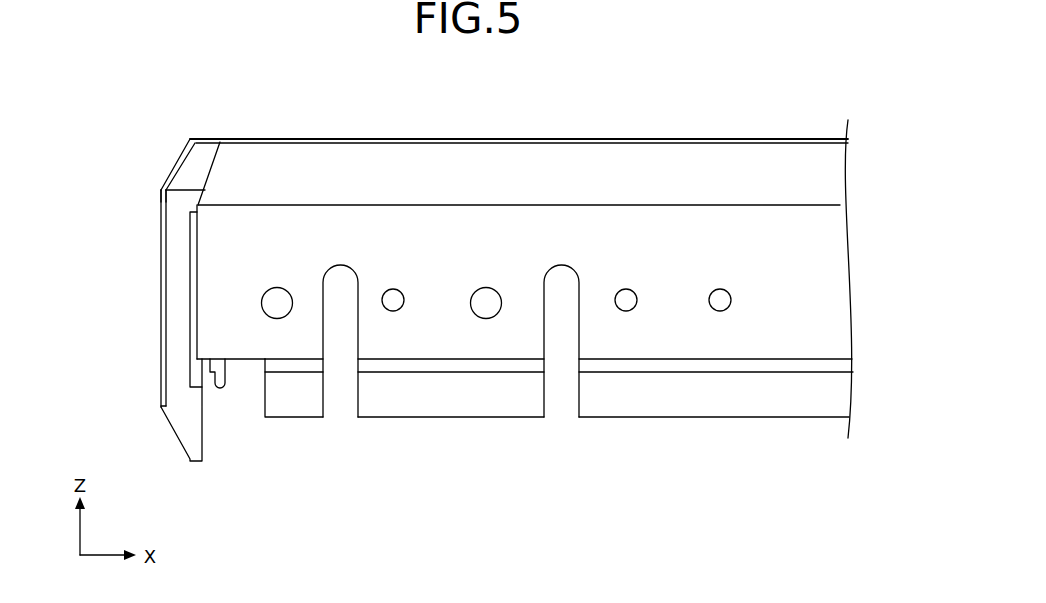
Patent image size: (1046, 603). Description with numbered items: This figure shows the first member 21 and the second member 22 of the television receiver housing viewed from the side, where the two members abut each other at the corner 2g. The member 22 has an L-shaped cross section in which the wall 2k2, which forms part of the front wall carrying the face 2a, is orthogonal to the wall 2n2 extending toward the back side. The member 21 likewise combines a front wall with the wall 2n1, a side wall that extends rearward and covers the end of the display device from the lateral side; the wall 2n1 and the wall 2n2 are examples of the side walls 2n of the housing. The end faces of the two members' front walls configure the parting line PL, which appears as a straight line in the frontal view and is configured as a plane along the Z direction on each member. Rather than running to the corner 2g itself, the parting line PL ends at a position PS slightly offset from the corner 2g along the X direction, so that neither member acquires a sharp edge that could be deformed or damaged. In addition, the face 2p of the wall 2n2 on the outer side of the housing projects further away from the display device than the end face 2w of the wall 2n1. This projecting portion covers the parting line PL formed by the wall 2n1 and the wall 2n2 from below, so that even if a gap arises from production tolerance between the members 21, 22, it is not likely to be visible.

The member 22 is at (725, 122).
The face 2a is at (471, 138).
The wall 2k2 is at (628, 138).
The parting line PL is at (205, 156).
The position PS is at (205, 190).
The corner 2g is at (162, 191).
The wall 2n1 is at (173, 310).
The wall 2n is at (163, 298).
The end face 2w is at (173, 352).
The member 21 is at (176, 450).
The face 2p is at (305, 348).
The wall 2n2 is at (782, 347).